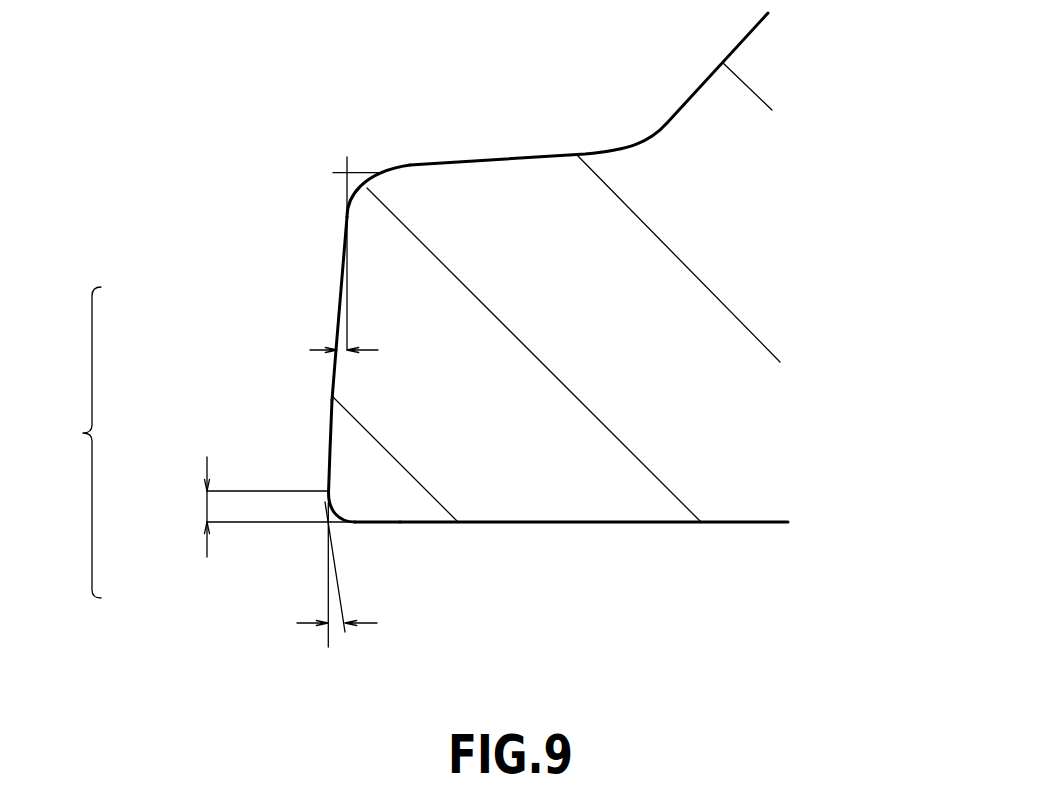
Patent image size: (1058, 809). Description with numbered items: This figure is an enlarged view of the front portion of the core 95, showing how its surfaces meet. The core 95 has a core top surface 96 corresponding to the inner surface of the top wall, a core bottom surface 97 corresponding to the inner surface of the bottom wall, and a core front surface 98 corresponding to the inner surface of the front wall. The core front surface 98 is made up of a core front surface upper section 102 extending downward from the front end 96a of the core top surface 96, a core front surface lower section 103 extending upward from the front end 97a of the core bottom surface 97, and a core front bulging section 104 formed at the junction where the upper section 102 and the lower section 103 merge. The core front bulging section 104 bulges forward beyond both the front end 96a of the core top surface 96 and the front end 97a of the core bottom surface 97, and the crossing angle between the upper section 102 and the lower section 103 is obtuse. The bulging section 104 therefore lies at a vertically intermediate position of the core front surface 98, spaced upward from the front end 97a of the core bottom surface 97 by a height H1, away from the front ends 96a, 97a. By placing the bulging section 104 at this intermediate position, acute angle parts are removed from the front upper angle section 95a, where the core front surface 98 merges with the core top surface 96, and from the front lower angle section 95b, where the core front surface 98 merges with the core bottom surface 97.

The core 95 is at (305, 157).
The front upper angle section 95a is at (365, 200).
The front lower angle section 95b is at (358, 510).
The core top surface 96 is at (536, 166).
The front end of the core top surface 96a is at (383, 183).
The core bottom surface 97 is at (580, 507).
The front end of the core bottom surface 97a is at (377, 513).
The core front surface 98 is at (199, 412).
The core front surface upper section 102 is at (333, 315).
The core front surface lower section 103 is at (337, 503).
The core front bulging section 104 is at (343, 475).
The height H1 is at (207, 505).